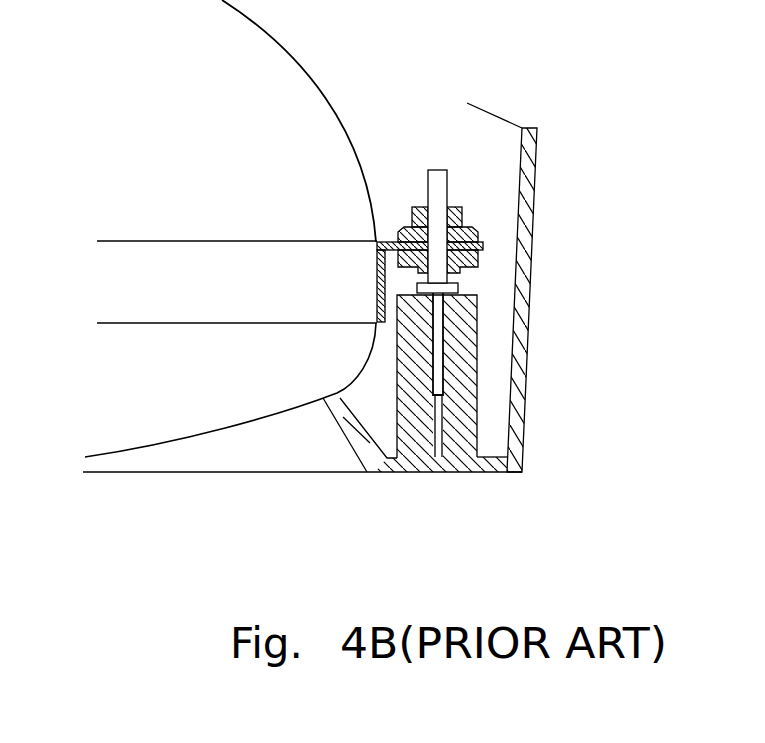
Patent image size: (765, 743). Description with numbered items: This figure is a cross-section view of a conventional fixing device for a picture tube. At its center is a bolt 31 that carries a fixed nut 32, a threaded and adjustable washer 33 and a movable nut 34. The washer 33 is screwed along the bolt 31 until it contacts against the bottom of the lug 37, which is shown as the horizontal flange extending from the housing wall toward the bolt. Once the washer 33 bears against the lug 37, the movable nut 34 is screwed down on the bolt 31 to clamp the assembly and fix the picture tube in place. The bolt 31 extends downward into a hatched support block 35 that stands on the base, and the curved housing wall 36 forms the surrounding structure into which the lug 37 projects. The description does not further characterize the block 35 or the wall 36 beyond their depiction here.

The bolt 31 is at (460, 338).
The fixed nut 32 is at (458, 284).
The threaded and adjustable washer 33 is at (480, 262).
The movable nut 34 is at (467, 213).
The support block 35 is at (462, 403).
The housing wall 36 is at (277, 400).
The lug 37 is at (488, 245).